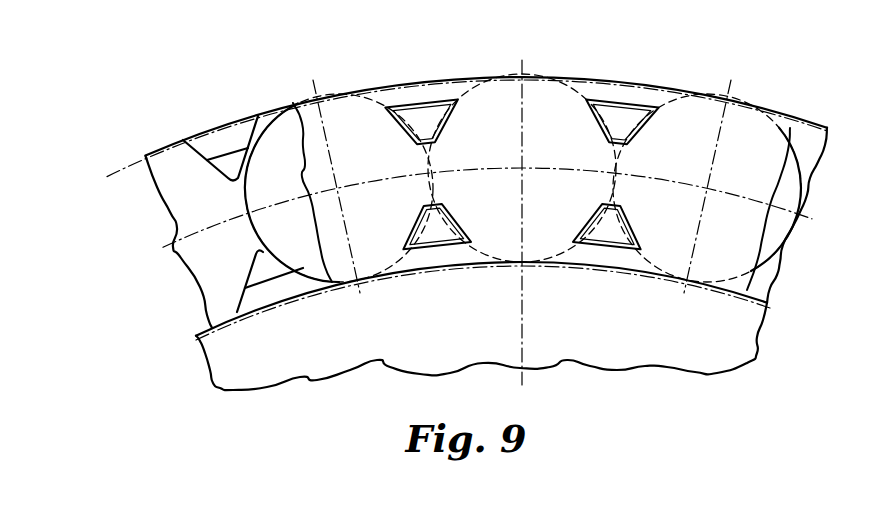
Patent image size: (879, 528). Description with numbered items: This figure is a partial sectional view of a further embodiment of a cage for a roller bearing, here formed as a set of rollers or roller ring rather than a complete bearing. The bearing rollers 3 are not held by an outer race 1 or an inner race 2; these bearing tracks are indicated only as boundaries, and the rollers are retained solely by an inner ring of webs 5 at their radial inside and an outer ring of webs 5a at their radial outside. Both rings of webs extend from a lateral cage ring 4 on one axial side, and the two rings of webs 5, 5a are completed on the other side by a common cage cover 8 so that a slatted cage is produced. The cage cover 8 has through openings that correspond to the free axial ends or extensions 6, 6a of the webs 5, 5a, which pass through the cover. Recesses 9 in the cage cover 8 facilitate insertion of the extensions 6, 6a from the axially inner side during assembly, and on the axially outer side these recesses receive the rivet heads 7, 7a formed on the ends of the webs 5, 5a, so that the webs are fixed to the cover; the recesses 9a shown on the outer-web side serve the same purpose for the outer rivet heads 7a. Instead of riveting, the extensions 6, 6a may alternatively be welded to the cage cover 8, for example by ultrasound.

The outer race 1 is at (112, 165).
The inner race 2 is at (218, 358).
The bearing rollers 3 is at (276, 152).
The lateral cage ring 4 is at (176, 198).
The inner webs 5 is at (258, 300).
The outer webs 5a is at (213, 140).
The extensions of inner webs 6 is at (268, 270).
The extensions of outer webs 6a is at (234, 160).
The rivet heads of inner webs 7 is at (433, 230).
The rivet heads of outer webs 7a is at (423, 120).
The cage cover 8 is at (788, 116).
The recesses 9 is at (596, 248).
The upper right retaining projection 9a is at (613, 106).